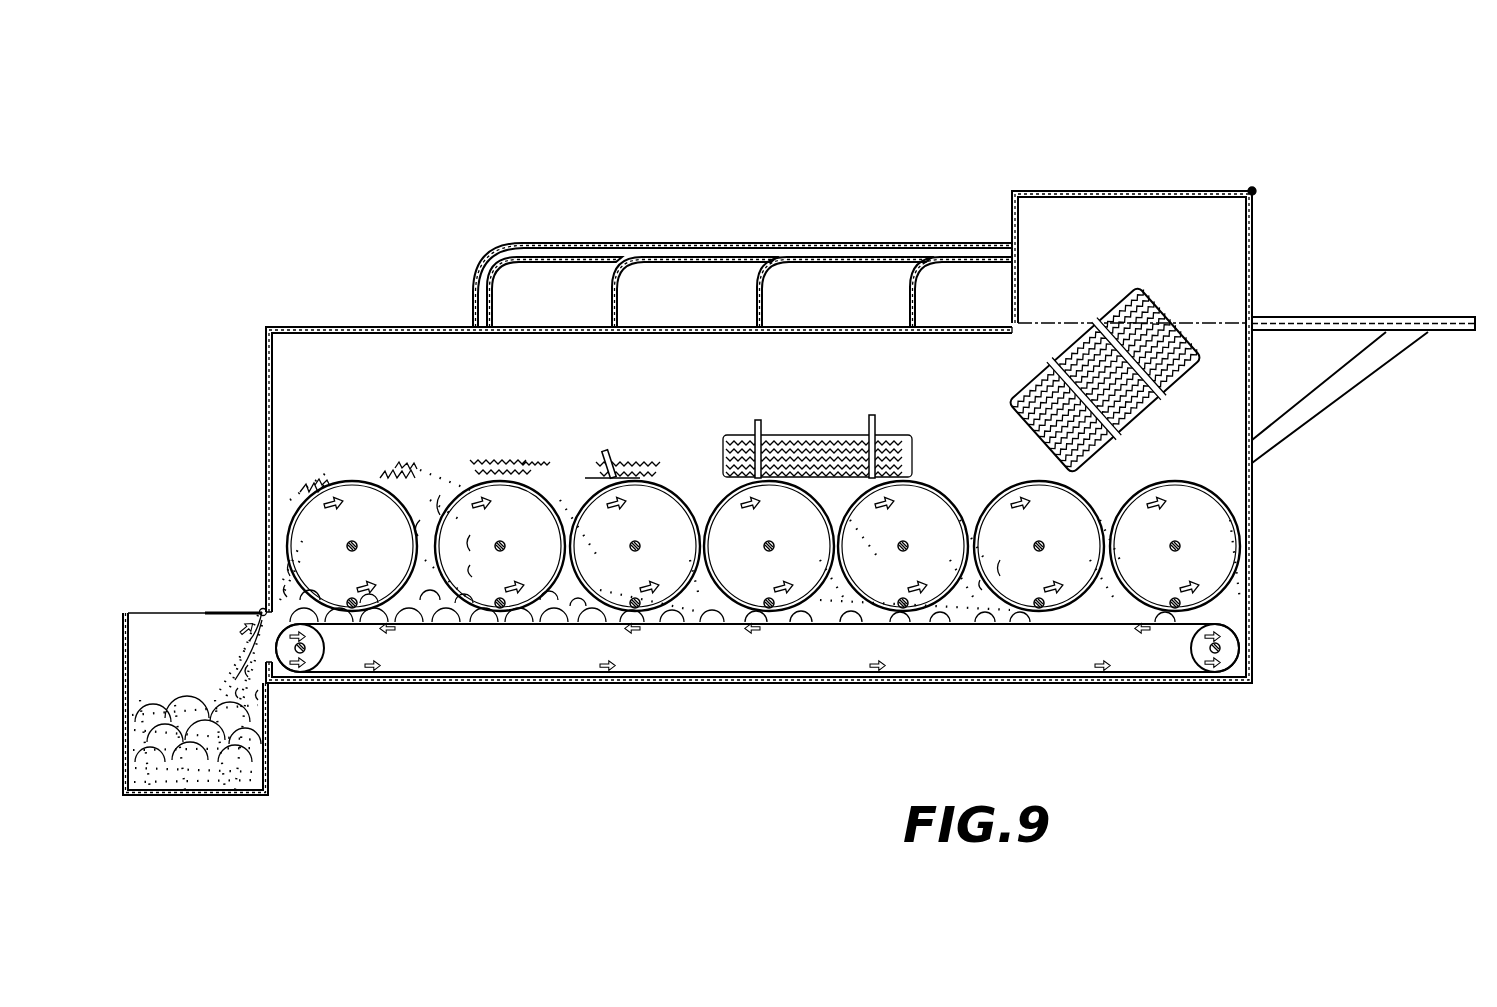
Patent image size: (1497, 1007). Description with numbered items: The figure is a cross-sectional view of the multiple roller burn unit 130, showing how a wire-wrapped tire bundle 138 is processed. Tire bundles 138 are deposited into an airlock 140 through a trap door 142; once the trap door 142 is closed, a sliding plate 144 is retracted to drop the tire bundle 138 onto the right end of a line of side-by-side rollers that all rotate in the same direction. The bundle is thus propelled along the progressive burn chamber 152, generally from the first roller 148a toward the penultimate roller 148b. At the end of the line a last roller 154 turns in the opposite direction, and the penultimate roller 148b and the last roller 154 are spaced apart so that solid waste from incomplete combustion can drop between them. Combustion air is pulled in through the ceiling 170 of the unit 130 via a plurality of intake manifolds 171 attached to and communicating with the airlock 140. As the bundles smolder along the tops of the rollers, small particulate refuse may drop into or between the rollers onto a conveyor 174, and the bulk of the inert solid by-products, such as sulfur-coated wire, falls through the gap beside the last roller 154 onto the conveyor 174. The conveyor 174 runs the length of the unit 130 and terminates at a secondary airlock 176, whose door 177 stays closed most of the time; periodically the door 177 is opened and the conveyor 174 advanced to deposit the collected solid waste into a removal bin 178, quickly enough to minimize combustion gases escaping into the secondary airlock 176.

The multiple roller burn unit 130 is at (350, 178).
The wire-wrapped tire bundle 138 is at (1118, 313).
The airlock 140 is at (1033, 190).
The trap door 142 is at (1255, 258).
The sliding plate 144 is at (1430, 331).
The first roller 148a is at (1213, 485).
The penultimate roller 148b is at (449, 479).
The progressive burn chamber 152 is at (693, 408).
The last roller 154 is at (350, 480).
The ceiling 170 is at (385, 335).
The intake manifolds 171 is at (660, 240).
The conveyor 174 is at (822, 672).
The secondary airlock 176 is at (245, 574).
The door 177 is at (212, 610).
The removal bin 178 is at (268, 728).